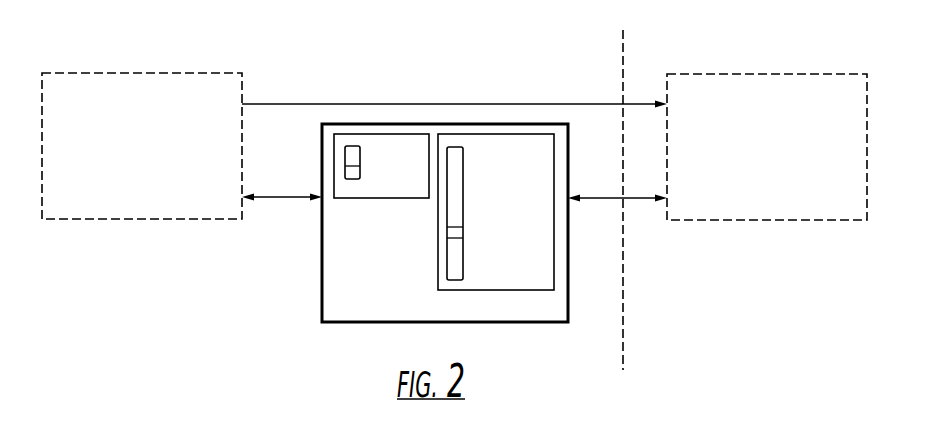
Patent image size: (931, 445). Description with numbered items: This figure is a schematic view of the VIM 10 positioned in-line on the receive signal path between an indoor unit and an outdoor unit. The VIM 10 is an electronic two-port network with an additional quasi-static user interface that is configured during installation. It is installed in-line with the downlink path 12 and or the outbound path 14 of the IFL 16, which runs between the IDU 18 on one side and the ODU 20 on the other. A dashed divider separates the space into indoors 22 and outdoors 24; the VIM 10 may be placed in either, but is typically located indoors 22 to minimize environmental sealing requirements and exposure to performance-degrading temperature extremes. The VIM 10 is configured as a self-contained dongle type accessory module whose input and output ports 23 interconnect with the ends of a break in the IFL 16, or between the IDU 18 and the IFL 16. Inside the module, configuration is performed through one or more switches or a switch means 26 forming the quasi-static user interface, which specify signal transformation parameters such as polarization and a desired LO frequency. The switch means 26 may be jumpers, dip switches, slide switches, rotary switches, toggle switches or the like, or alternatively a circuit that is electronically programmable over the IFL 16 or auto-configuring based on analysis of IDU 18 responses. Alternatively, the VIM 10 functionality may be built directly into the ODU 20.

The VIM 10 is at (336, 283).
The downlink path 12 is at (456, 197).
The outbound path 14 is at (456, 104).
The IFL 16 is at (270, 197).
The IDU 18 is at (173, 188).
The ODU 20 is at (778, 192).
The indoors 22 is at (585, 62).
The input and output ports 23 is at (318, 204).
The outdoors 24 is at (633, 62).
The switch means 26 is at (375, 148).